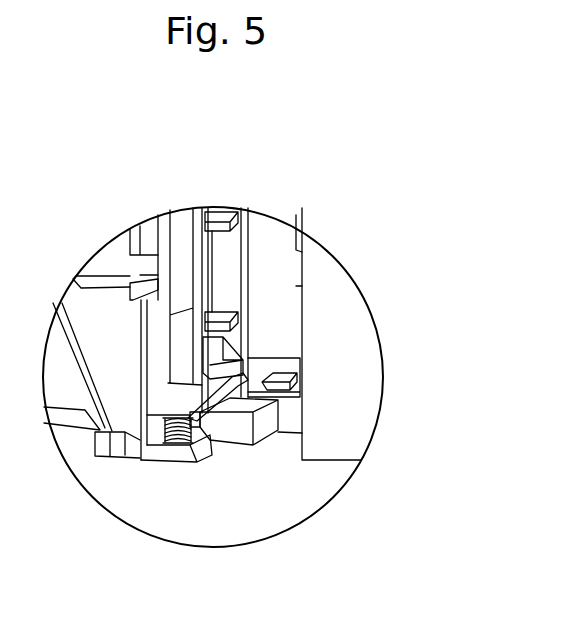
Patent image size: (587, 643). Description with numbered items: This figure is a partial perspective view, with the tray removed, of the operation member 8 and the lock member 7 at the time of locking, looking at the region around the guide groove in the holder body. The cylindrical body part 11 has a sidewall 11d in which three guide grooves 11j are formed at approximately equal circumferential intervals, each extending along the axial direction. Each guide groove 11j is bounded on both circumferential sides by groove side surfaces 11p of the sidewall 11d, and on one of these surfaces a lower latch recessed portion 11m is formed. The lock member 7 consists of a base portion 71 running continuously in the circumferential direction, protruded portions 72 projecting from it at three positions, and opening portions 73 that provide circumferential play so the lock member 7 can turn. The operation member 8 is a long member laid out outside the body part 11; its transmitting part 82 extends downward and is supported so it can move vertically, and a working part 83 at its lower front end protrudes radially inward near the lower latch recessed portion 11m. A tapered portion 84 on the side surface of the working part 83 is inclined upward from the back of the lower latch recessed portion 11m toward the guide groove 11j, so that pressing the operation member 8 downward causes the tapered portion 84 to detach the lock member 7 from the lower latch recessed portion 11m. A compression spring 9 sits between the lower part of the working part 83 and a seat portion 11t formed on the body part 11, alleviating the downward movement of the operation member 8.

The body part 11 is at (379, 393).
The sidewall 11d is at (358, 347).
The guide groove 11j is at (296, 250).
The lower latch recessed portion 11m is at (303, 432).
The groove side surface 11p is at (250, 240).
The seat portion 11t is at (211, 450).
The transmitting part 82 is at (187, 223).
The operation member 8 is at (207, 208).
The working part 83 is at (227, 353).
The tapered portion 84 is at (260, 432).
The lock member 7 is at (268, 448).
The base portion 71 is at (356, 343).
The protruded portion 72 is at (205, 414).
The opening portion 73 is at (287, 383).
The compression spring 9 is at (163, 444).